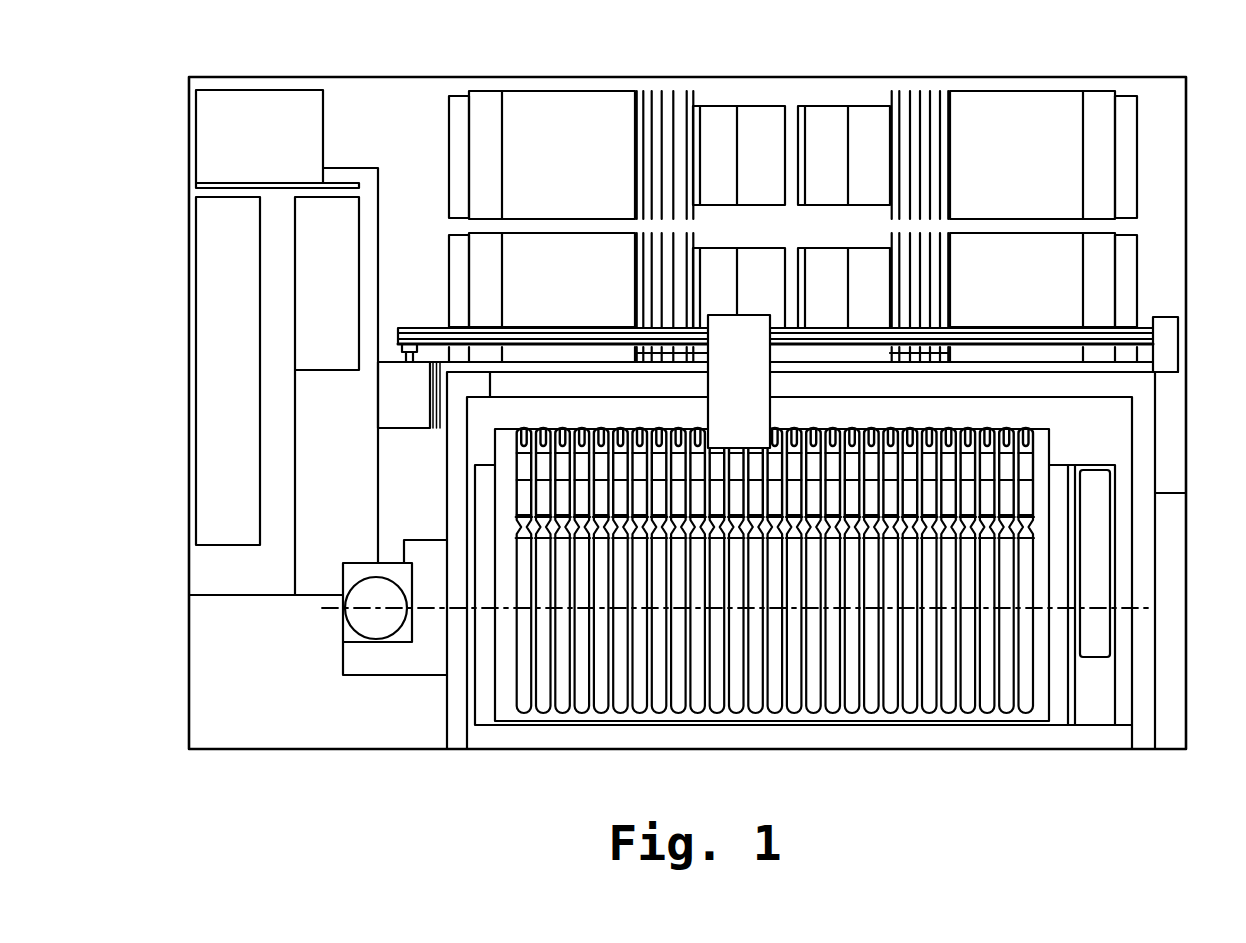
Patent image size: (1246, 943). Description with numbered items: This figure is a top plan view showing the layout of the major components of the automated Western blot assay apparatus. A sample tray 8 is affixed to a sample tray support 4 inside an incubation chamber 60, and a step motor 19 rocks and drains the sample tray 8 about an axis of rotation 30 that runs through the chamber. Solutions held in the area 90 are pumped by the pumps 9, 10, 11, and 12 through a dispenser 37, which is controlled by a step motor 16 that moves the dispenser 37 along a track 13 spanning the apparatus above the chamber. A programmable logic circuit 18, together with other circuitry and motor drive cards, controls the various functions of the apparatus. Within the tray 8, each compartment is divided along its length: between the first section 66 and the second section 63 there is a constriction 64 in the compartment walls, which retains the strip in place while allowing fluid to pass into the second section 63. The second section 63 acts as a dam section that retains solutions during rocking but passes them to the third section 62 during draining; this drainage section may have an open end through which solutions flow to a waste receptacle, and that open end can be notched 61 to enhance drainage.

The sample tray support 4 is at (487, 722).
The sample tray 8 is at (1041, 713).
The pump 9 is at (723, 260).
The pump 10 is at (713, 122).
The pump 11 is at (815, 122).
The pump 12 is at (827, 260).
The track 13 is at (485, 332).
The step motor 16 is at (409, 395).
The programmable logic circuit 18 is at (327, 283).
The step motor 19 is at (395, 619).
The axis of rotation 30 is at (427, 613).
The dispenser 37 is at (739, 381).
The incubation chamber 60 is at (1043, 390).
The notch 61 is at (1032, 429).
The third section 62 is at (1030, 470).
The second section 63 is at (1030, 495).
The constriction 64 is at (1030, 530).
The first section 66 is at (1030, 681).
The area 90 is at (228, 371).